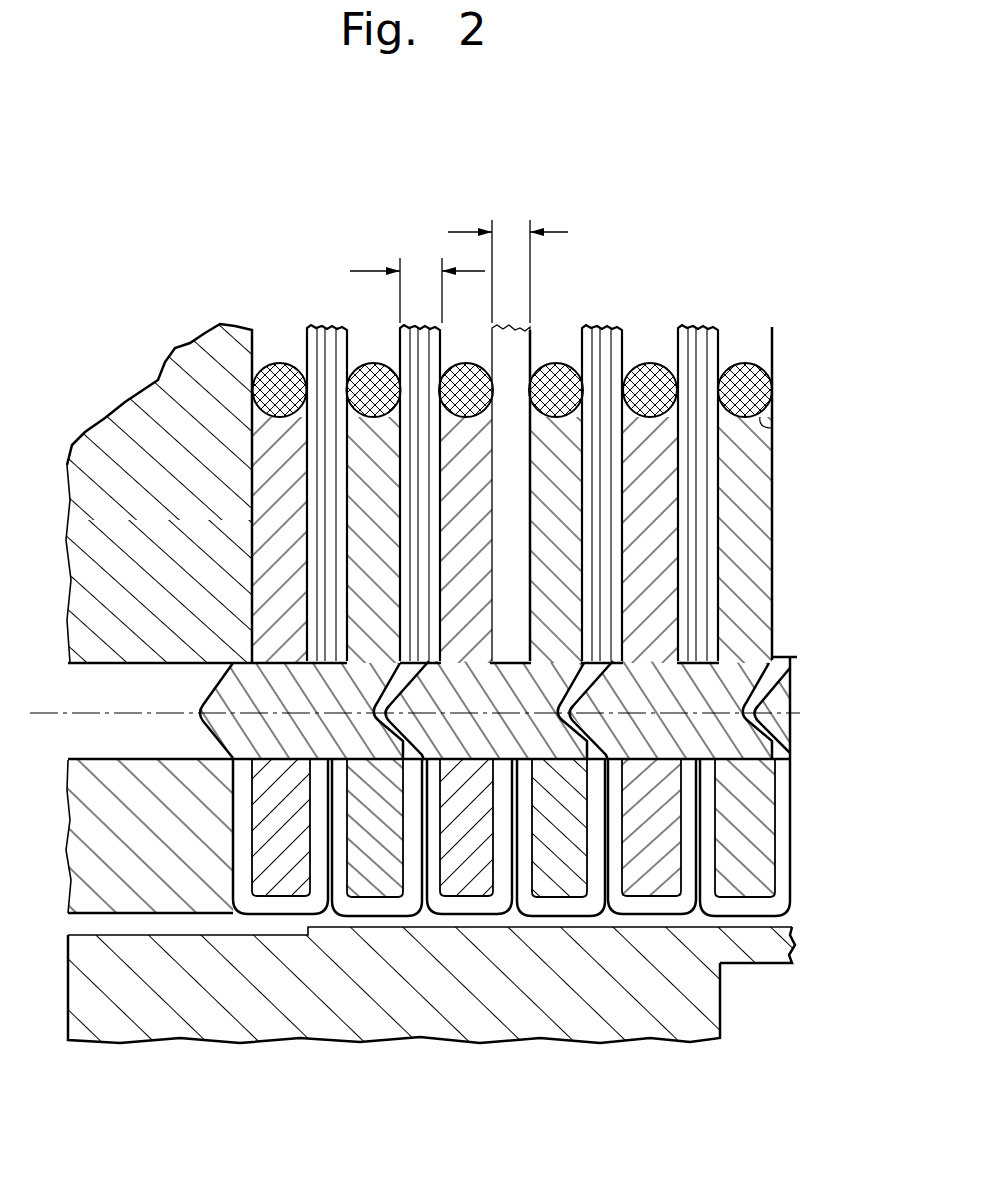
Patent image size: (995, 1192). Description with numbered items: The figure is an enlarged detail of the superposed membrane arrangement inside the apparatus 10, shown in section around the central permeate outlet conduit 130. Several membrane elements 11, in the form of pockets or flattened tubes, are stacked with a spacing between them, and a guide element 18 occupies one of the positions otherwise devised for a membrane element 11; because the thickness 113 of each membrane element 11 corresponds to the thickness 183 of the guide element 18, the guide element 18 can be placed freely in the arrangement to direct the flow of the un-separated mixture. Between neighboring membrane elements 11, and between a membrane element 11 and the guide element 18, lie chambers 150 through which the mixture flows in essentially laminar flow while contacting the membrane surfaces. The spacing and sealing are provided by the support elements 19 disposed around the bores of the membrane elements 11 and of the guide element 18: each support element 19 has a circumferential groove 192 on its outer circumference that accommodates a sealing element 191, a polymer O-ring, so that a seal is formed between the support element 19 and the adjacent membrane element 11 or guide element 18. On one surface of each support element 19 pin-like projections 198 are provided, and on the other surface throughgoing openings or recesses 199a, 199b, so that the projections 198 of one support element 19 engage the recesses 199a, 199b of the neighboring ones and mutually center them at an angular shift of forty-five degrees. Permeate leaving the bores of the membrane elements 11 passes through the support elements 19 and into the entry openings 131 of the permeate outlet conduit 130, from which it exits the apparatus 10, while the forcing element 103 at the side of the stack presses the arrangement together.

The apparatus 10 is at (692, 182).
The membrane element 11 is at (327, 330).
The guide element 18 is at (512, 343).
The support element 19 is at (275, 563).
The forcing element 103 is at (200, 435).
The thickness 113 is at (422, 273).
The chamber for the mixture of materials 150 is at (370, 337).
The thickness 183 is at (515, 232).
The sealing element 191 is at (750, 367).
The circumferential groove 192 is at (772, 428).
The pin-like projections 198 is at (677, 685).
The throughgoing openings or recesses 199a is at (478, 745).
The throughgoing openings or recesses 199b is at (381, 730).
The permeate outlet conduit 130 is at (583, 1018).
The entry openings 131 is at (758, 948).